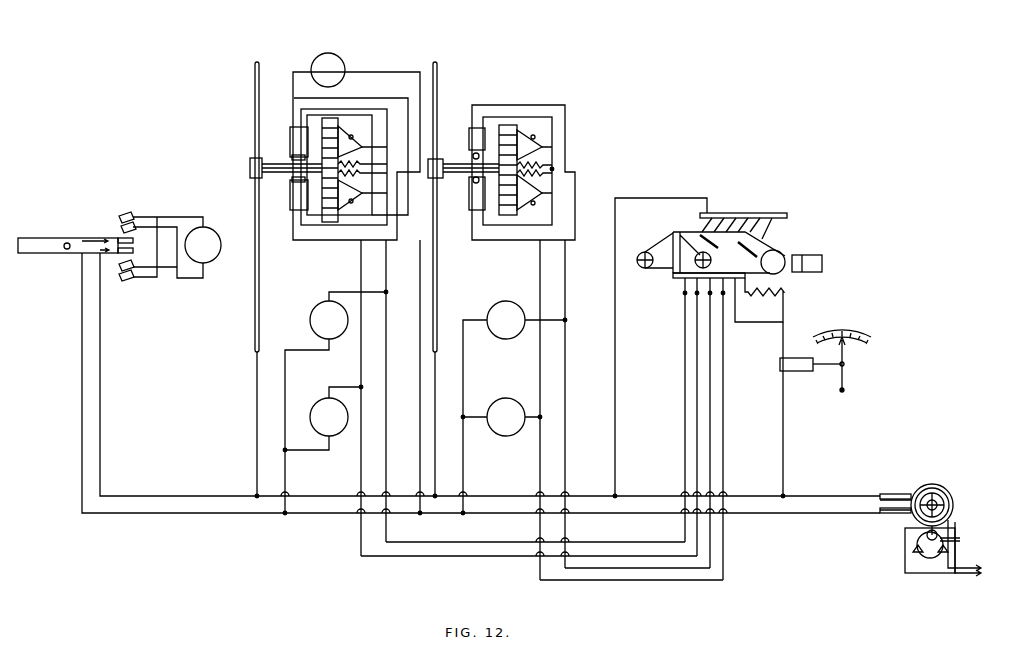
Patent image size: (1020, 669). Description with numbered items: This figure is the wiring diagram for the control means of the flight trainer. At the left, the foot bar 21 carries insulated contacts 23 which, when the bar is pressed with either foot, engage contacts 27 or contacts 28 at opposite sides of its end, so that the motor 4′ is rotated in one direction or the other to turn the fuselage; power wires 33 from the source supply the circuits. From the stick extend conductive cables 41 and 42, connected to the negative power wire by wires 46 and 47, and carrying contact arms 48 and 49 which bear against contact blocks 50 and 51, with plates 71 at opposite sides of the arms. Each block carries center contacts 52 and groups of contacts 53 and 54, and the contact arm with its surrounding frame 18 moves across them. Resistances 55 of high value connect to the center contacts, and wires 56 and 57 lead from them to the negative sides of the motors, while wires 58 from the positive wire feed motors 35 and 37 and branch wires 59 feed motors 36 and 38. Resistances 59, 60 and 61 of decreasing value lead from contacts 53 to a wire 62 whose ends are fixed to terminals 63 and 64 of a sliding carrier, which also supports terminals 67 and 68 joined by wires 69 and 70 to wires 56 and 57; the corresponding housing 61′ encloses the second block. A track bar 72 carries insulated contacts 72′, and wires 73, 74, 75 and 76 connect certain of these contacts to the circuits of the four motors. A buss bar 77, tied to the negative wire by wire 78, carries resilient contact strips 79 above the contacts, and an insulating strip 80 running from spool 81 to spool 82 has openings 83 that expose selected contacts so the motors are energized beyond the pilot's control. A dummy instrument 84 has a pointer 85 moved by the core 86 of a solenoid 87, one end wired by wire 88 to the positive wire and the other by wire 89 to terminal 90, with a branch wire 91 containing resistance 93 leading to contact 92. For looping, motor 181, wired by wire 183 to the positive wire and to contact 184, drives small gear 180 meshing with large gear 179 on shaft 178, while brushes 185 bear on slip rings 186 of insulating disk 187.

The foot bar 21 is at (55, 255).
The insulated contacts 23 is at (118, 240).
The contacts 27 is at (127, 214).
The contacts 28 is at (130, 279).
The motor 4′ is at (177, 247).
The power wires 33 is at (100, 345).
The cable 41 is at (255, 315).
The wire 46 is at (257, 408).
The contact arm 48 is at (275, 160).
The terminal 67 is at (294, 155).
The terminal 63 is at (290, 140).
The terminal 64 is at (292, 172).
The terminal 68 is at (292, 183).
The wire 69 is at (300, 110).
The wire 183 is at (412, 72).
The resistances 55 is at (387, 110).
The group of contacts 53 is at (312, 118).
The armature 18 is at (330, 118).
The motor 181 is at (327, 53).
The wire 62 is at (351, 135).
The resistance 61 is at (355, 140).
The resistance 60 is at (360, 150).
The resistance 59 is at (365, 160).
The group of contacts 54 is at (318, 192).
The contact block 50 is at (328, 210).
The contact 184 is at (332, 218).
The wire 70 is at (356, 242).
The wire 57 is at (395, 232).
The wire 56 is at (387, 272).
The cable 42 is at (440, 294).
The contact arm 49 is at (450, 163).
The plates 71 is at (473, 156).
The housing 61′ is at (535, 137).
The center contacts 52 is at (550, 165).
The contact block 51 is at (507, 217).
The motor 35 is at (329, 320).
The motor 36 is at (329, 417).
The motor 37 is at (506, 320).
The motor 38 is at (506, 417).
The wires 58 is at (286, 476).
The wire 47 is at (436, 458).
The wire 78 is at (650, 198).
The buss bar 77 is at (755, 213).
The resilient contact strips 79 is at (760, 228).
The strip of insulating material 80 is at (790, 250).
The spool 81 is at (780, 270).
The spool 82 is at (643, 268).
The track bar 72 is at (670, 272).
The contacts 72′ is at (723, 285).
The openings 83 is at (715, 244).
The contact 92 is at (770, 262).
The resistance 93 is at (759, 300).
The branch wire 91 is at (784, 307).
The terminal 90 is at (735, 283).
The wire 89 is at (785, 340).
The wire 88 is at (785, 455).
The solenoid 87 is at (793, 358).
The core 86 is at (828, 368).
The pointer 85 is at (845, 377).
The dummy instruments 84 is at (862, 352).
The wire 73 is at (685, 370).
The wire 74 is at (697, 380).
The wire 75 is at (710, 405).
The wire 76 is at (723, 420).
The large gear 179 is at (935, 488).
The insulating disk 187 is at (922, 490).
The shaft 178 is at (938, 502).
The slip rings 186 is at (912, 492).
The brushes 185 is at (955, 518).
The small gear 180 is at (917, 538).